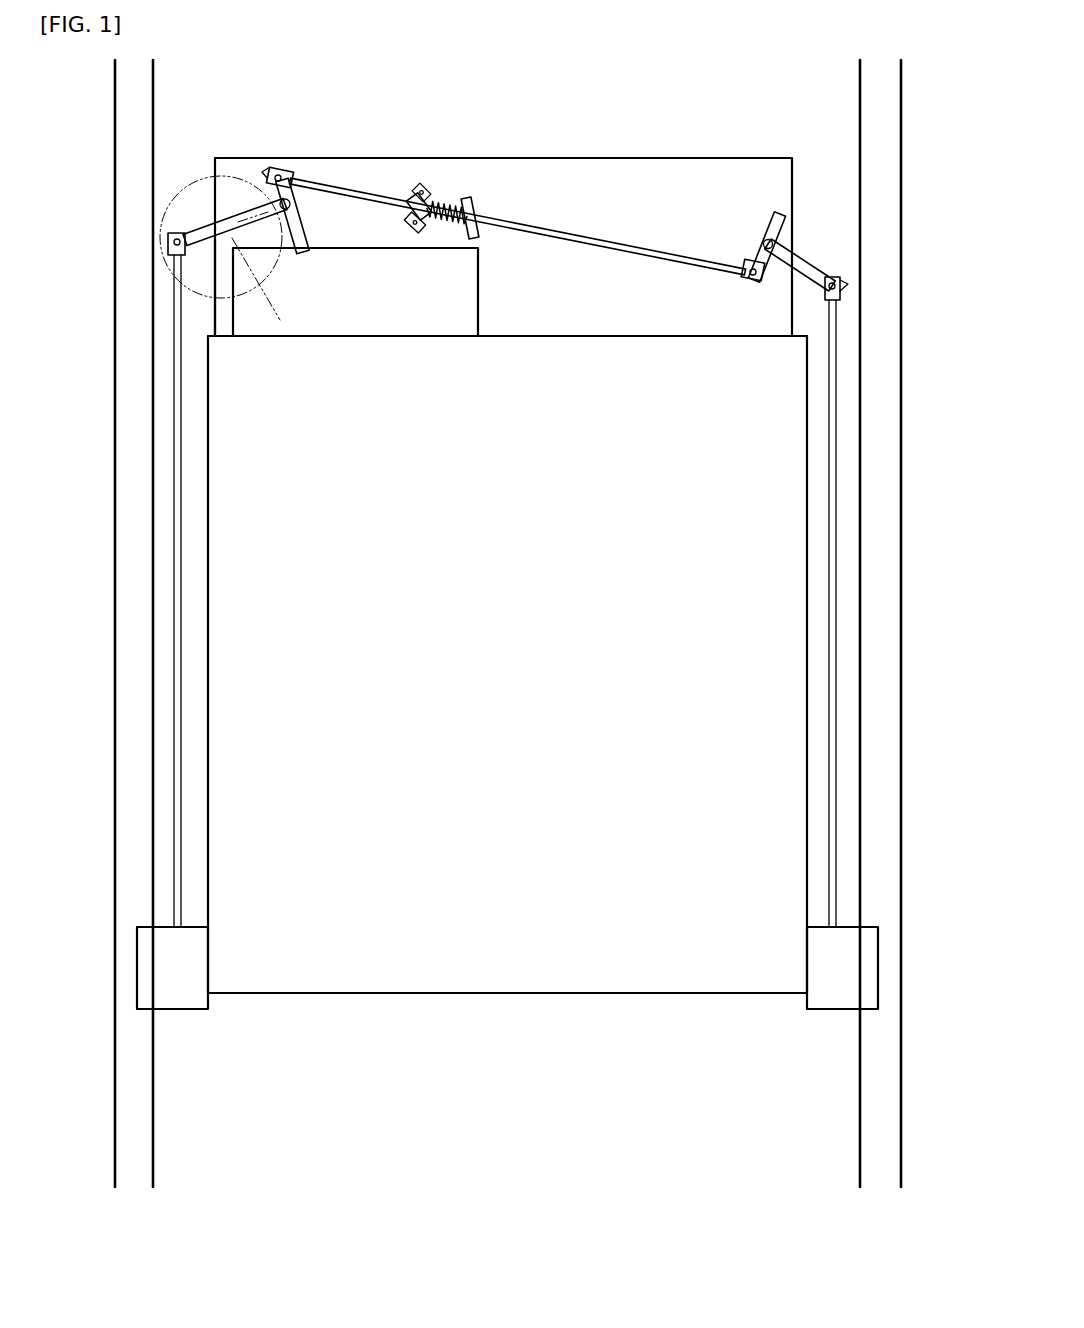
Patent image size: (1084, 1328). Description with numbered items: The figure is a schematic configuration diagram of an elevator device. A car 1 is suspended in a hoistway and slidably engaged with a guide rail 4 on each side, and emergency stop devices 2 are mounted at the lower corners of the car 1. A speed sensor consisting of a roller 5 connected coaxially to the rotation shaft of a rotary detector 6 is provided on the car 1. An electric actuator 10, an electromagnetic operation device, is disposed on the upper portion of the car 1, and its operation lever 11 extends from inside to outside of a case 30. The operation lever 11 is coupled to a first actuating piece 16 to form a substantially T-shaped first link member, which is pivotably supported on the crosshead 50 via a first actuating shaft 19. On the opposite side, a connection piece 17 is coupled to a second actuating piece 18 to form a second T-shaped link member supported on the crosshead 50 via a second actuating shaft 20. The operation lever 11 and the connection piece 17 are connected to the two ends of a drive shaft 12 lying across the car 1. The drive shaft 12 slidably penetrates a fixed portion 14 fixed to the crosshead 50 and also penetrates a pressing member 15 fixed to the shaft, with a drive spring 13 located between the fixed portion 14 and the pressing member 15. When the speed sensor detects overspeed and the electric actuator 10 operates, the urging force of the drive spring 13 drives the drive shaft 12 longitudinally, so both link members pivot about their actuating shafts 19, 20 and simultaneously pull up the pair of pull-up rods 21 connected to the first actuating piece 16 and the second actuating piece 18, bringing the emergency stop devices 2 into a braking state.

The car 1 is at (464, 975).
The emergency stop device 2 is at (150, 963).
The guide rail 4 is at (133, 790).
The roller 5 is at (195, 303).
The rotary detector 6 is at (185, 258).
The electric actuator 10 is at (376, 228).
The operation lever 11 is at (295, 174).
The drive shaft 12 is at (603, 240).
The drive spring 13 is at (455, 198).
The fixed portion 14 is at (422, 188).
The pressing member 15 is at (474, 205).
The first actuating piece 16 is at (248, 216).
The connection piece 17 is at (792, 217).
The second actuating piece 18 is at (803, 263).
The first actuating shaft 19 is at (276, 200).
The second actuating shaft 20 is at (778, 238).
The pull-up rod 21 is at (178, 585).
The case 30 is at (468, 287).
The crosshead 50 is at (722, 157).